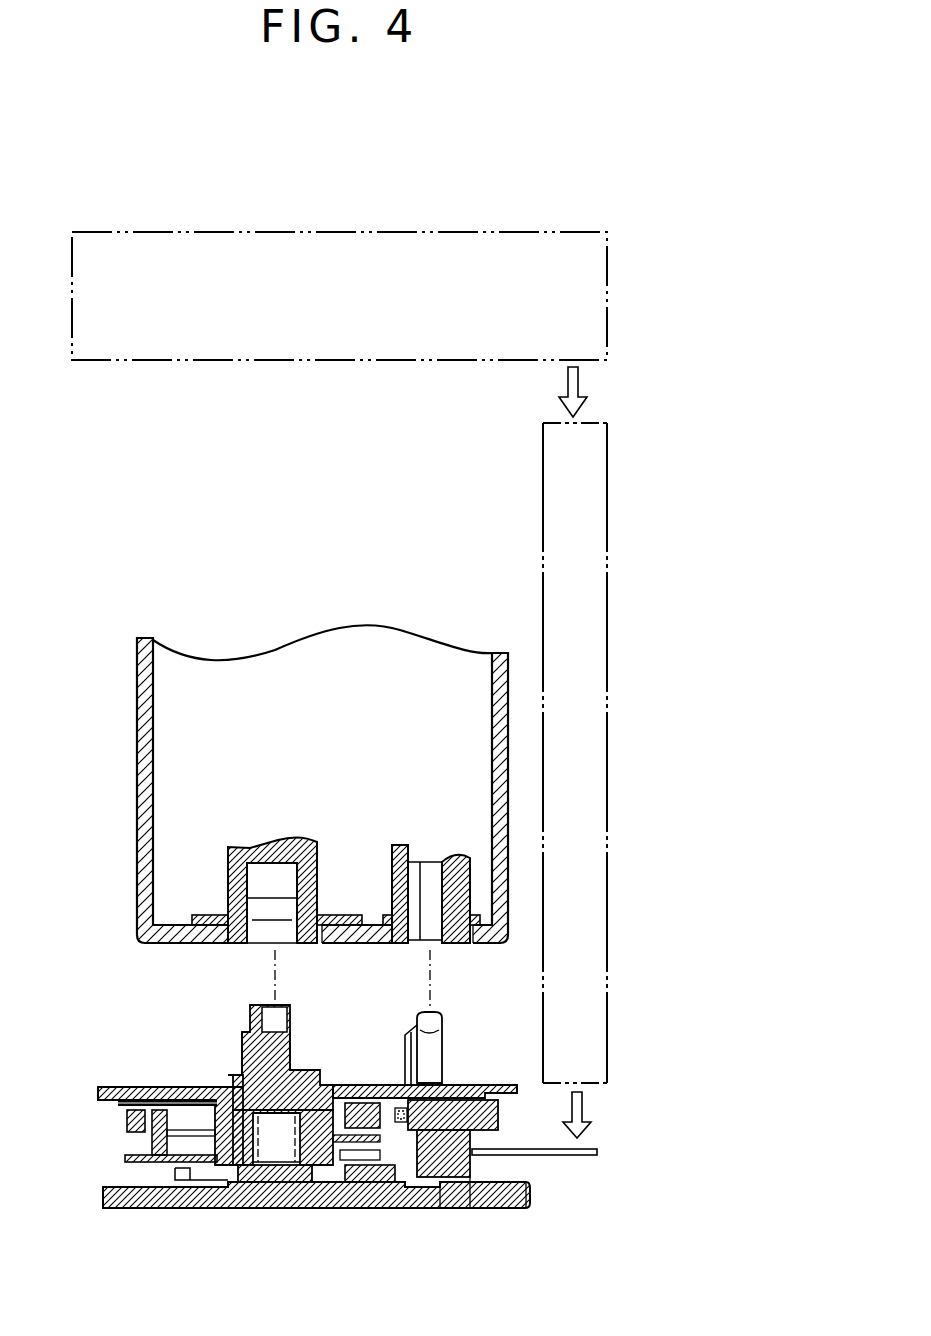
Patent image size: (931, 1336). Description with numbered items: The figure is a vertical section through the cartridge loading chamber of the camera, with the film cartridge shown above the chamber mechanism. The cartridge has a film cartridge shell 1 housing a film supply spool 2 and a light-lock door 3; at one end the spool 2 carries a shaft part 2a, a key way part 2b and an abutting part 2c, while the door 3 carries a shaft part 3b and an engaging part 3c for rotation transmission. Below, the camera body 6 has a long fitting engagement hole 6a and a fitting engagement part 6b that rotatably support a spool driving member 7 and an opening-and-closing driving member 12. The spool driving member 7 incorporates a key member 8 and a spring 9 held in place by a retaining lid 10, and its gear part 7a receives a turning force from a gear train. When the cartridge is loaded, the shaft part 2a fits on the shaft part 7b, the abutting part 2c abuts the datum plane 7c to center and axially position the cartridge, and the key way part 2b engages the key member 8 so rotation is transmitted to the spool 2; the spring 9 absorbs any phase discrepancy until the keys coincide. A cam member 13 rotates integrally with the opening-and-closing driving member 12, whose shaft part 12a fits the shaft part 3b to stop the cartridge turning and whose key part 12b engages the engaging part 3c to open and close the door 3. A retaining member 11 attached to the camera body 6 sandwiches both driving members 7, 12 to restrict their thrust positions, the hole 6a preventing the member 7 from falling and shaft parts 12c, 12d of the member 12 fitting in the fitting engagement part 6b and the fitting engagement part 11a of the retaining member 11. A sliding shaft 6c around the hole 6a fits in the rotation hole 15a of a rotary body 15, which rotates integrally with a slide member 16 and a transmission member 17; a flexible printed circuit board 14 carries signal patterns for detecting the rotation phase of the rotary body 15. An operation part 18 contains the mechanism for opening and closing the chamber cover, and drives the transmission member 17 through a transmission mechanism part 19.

The film cartridge shell 1 is at (137, 690).
The film supply spool 2 is at (282, 905).
The shaft part 2a is at (296, 943).
The key way part 2b is at (246, 943).
The abutting part 2c is at (312, 943).
The light-lock door 3 is at (437, 900).
The shaft part 3b is at (458, 943).
The engaging part 3c is at (406, 943).
The camera body 6 is at (210, 1093).
The fitting engagement hole 6a is at (237, 1078).
The fitting engagement part 6b is at (495, 1085).
The sliding shaft 6c is at (175, 1087).
The spool driving member 7 is at (305, 1136).
The gear part 7a is at (345, 1200).
The shaft part 7b is at (305, 1050).
The datum plane 7c is at (310, 1068).
The key member 8 is at (250, 1045).
The spring 9 is at (240, 1205).
The retaining lid 10 is at (275, 1208).
The retaining member 11 is at (165, 1208).
The fitting engagement part 11a is at (470, 1185).
The opening-and-closing driving member 12 is at (465, 1089).
The shaft part 12a is at (443, 1058).
The key part 12b is at (414, 1068).
The shaft part 12c is at (501, 1089).
The shaft part 12d is at (498, 1192).
The cam member 13 is at (408, 1187).
The flexible printed circuit board 14 is at (118, 1103).
The rotary body 15 is at (328, 1210).
The rotation hole 15a is at (140, 1160).
The slide member 16 is at (130, 1130).
The transmission member 17 is at (580, 1157).
The operation part 18 is at (370, 232).
The transmission mechanism part 19 is at (607, 495).